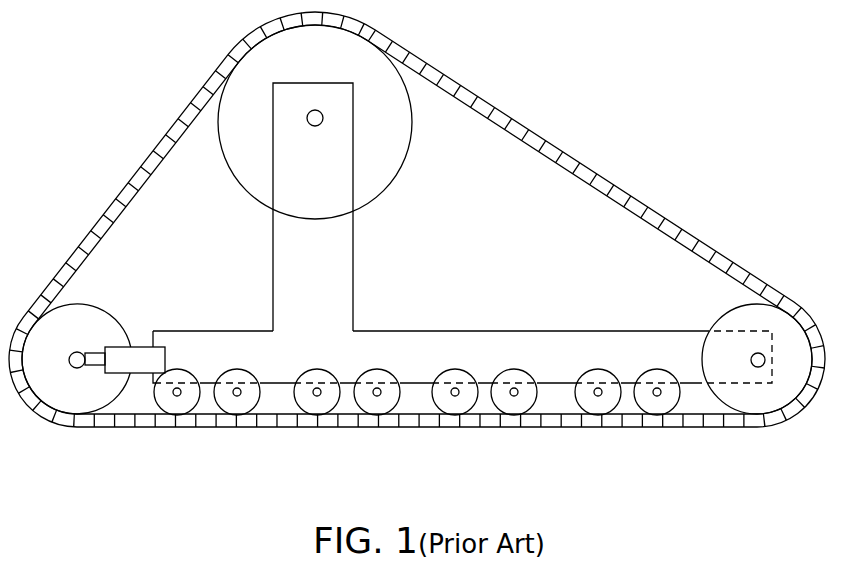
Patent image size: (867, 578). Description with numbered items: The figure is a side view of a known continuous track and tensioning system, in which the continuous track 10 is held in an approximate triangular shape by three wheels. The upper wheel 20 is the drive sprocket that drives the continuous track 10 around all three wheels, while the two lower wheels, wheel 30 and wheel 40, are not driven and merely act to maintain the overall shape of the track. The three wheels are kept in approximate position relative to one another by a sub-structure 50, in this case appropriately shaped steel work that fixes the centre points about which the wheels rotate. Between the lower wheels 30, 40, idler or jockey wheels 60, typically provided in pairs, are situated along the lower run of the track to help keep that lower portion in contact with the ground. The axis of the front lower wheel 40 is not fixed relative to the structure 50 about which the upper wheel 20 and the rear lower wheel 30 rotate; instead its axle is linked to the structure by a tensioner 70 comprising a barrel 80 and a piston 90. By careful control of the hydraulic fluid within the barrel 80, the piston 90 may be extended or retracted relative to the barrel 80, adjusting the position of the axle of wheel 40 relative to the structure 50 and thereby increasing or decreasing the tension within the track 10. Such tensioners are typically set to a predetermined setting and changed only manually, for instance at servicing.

The continuous track 10 is at (528, 128).
The upper wheel 20 is at (393, 131).
The lower wheel 30 is at (815, 345).
The lower wheel 40 is at (88, 346).
The sub-structure 50 is at (327, 297).
The idler or jockey wheels 60 is at (240, 410).
The tensioner 70 is at (139, 334).
The barrel 80 is at (158, 360).
The piston 90 is at (90, 368).